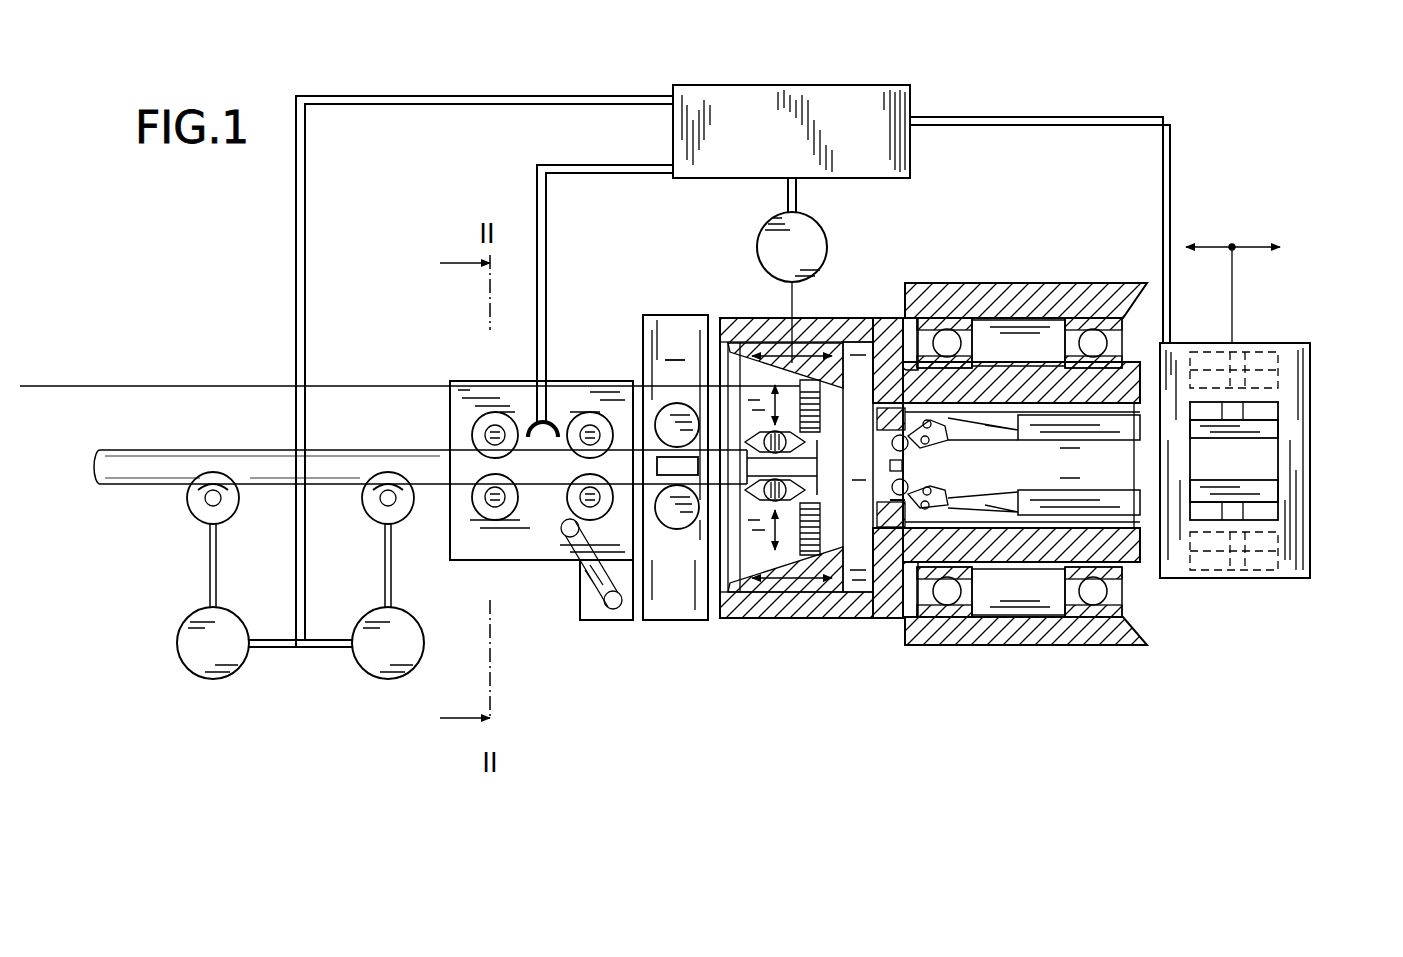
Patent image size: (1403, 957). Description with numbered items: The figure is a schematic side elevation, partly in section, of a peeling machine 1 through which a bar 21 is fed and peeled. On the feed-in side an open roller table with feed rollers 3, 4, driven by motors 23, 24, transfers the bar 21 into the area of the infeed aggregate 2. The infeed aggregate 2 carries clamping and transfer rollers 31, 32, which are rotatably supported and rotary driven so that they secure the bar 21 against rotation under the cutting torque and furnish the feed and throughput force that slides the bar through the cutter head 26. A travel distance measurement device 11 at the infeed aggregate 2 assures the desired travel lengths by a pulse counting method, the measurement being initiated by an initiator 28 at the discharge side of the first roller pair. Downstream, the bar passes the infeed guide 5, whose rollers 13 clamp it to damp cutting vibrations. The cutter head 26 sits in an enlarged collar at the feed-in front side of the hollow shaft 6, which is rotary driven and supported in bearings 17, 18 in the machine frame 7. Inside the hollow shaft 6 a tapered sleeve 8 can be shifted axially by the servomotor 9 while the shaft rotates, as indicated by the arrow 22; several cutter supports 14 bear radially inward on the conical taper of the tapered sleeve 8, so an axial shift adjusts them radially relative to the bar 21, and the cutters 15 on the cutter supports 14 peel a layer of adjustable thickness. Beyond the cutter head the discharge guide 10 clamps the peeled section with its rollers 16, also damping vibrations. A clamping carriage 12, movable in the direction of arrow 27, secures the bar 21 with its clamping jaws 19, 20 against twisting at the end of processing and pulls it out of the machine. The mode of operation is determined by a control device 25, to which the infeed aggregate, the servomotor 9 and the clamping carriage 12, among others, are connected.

The peeling machine 1 is at (438, 325).
The infeed aggregate 2 is at (495, 383).
The feed roller 3 is at (192, 510).
The feed roller 4 is at (370, 512).
The infeed guide 5 is at (675, 467).
The hollow shaft 6 is at (890, 330).
The machine frame 7 is at (1065, 305).
The tapered sleeve 8 is at (748, 345).
The servomotor 9 is at (810, 228).
The discharge guide 10 is at (934, 463).
The travel distance measurement device 11 is at (596, 603).
The clamping carriage 12 is at (1300, 365).
The rollers 13 is at (660, 410).
The cutter supports 14 is at (745, 555).
The cutters 15 is at (757, 498).
The rollers 16 is at (897, 503).
The bearing 17 is at (945, 597).
The bearing 18 is at (1094, 600).
The clamping jaw 19 is at (1265, 430).
The clamping jaw 20 is at (1262, 494).
The bar 21 is at (160, 450).
The arrow 22 is at (800, 345).
The motor 23 is at (196, 670).
The motor 24 is at (365, 665).
The control device 25 is at (772, 149).
The cutter head 26 is at (787, 624).
The arrow 27 is at (1222, 243).
The initiator 28 is at (553, 425).
The clamping and transfer roller 31 is at (478, 427).
The clamping and transfer roller 32 is at (488, 520).